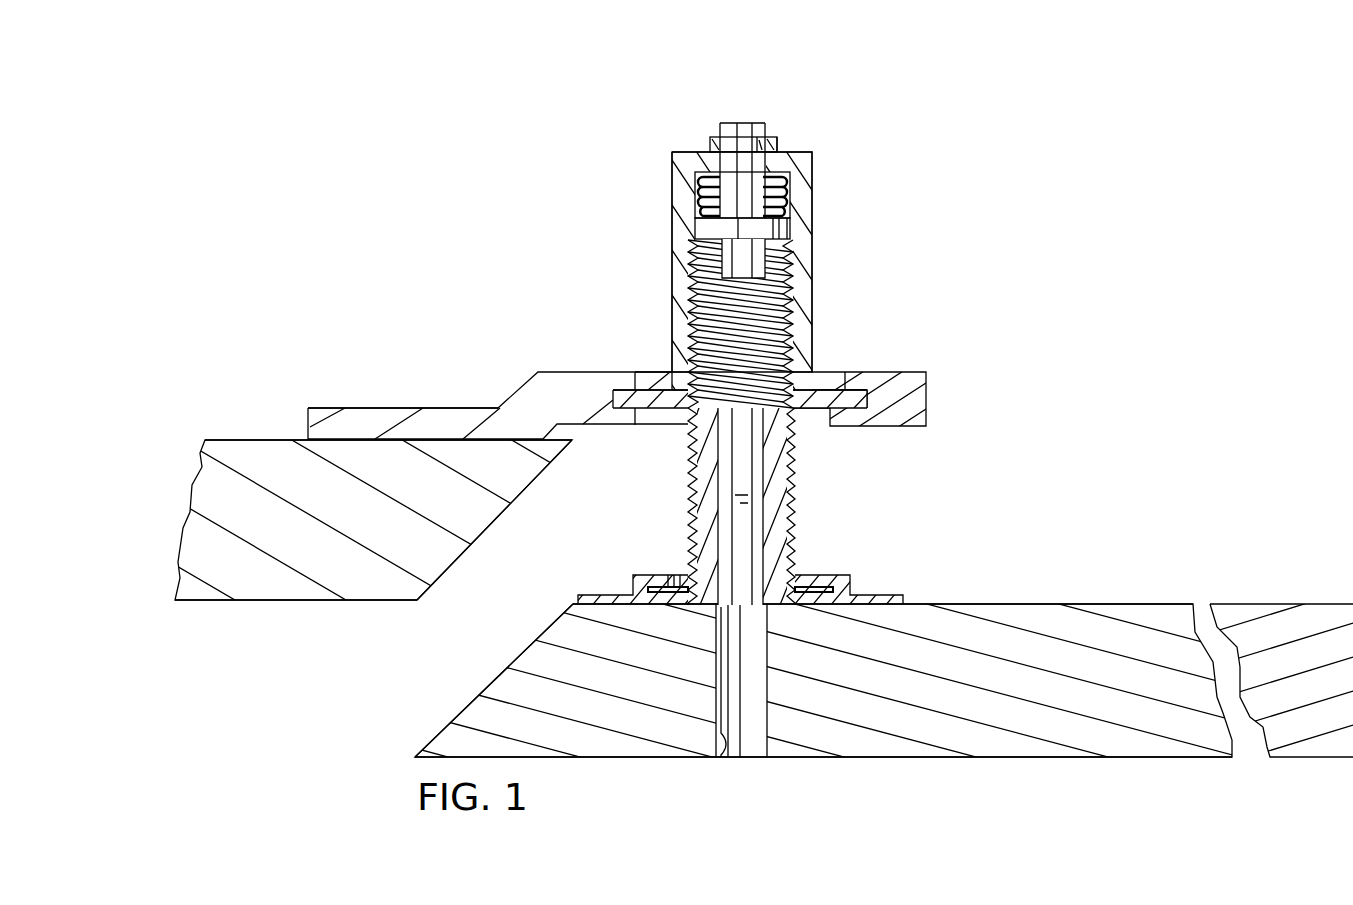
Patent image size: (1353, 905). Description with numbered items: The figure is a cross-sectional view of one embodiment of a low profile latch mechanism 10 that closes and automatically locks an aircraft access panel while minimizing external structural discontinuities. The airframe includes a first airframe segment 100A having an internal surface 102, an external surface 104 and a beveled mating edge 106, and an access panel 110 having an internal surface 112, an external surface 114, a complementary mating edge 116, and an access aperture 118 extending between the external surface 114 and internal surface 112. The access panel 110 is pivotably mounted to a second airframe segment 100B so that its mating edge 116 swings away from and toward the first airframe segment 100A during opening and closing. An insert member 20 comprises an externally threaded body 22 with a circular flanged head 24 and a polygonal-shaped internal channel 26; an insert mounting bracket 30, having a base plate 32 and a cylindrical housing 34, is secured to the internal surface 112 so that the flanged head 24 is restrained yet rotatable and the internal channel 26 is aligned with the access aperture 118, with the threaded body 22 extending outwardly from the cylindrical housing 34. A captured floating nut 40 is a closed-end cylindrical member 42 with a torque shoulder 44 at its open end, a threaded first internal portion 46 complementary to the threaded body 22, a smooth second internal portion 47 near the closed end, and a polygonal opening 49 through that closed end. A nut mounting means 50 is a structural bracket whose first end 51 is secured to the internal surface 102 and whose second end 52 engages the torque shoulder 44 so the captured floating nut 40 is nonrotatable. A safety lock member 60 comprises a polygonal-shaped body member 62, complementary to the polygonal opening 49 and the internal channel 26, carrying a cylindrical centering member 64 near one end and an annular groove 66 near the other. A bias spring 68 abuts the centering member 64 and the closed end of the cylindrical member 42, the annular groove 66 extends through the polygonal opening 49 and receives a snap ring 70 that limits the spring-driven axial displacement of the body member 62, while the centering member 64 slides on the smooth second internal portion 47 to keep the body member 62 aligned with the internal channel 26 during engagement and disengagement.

The low profile latch mechanism 10 is at (908, 294).
The insert member 20 is at (739, 506).
The threaded body 22 is at (690, 494).
The circular flanged head 24 is at (800, 573).
The polygonal-shaped internal channel 26 is at (723, 447).
The insert mounting bracket 30 is at (754, 604).
The base plate 32 is at (888, 597).
The cylindrical housing 34 is at (648, 573).
The captured floating nut 40 is at (849, 245).
The closed-end cylindrical member 42 is at (672, 303).
The torque shoulder 44 is at (832, 410).
The first internal portion 46 is at (787, 337).
The second internal portion 47 is at (790, 205).
The polygonal opening 49 is at (760, 165).
The nut mounting means 50 is at (509, 369).
The first end 51 is at (357, 407).
The second end 52 is at (898, 372).
The safety lock member 60 is at (740, 142).
The polygonal-shaped body member 62 is at (714, 150).
The cylindrical centering member 64 is at (700, 230).
The annular groove 66 is at (740, 137).
The bias spring 68 is at (697, 176).
The snap ring 70 is at (768, 147).
The first airframe segment 100A is at (505, 482).
The second airframe segment 100B is at (1263, 627).
The internal surface 102 is at (290, 440).
The external surface 104 is at (310, 604).
The mating edge 106 is at (455, 562).
The access panel 110 is at (983, 744).
The internal surface 112 is at (1025, 604).
The external surface 114 is at (818, 757).
The mating edge 116 is at (490, 684).
The access aperture 118 is at (720, 757).